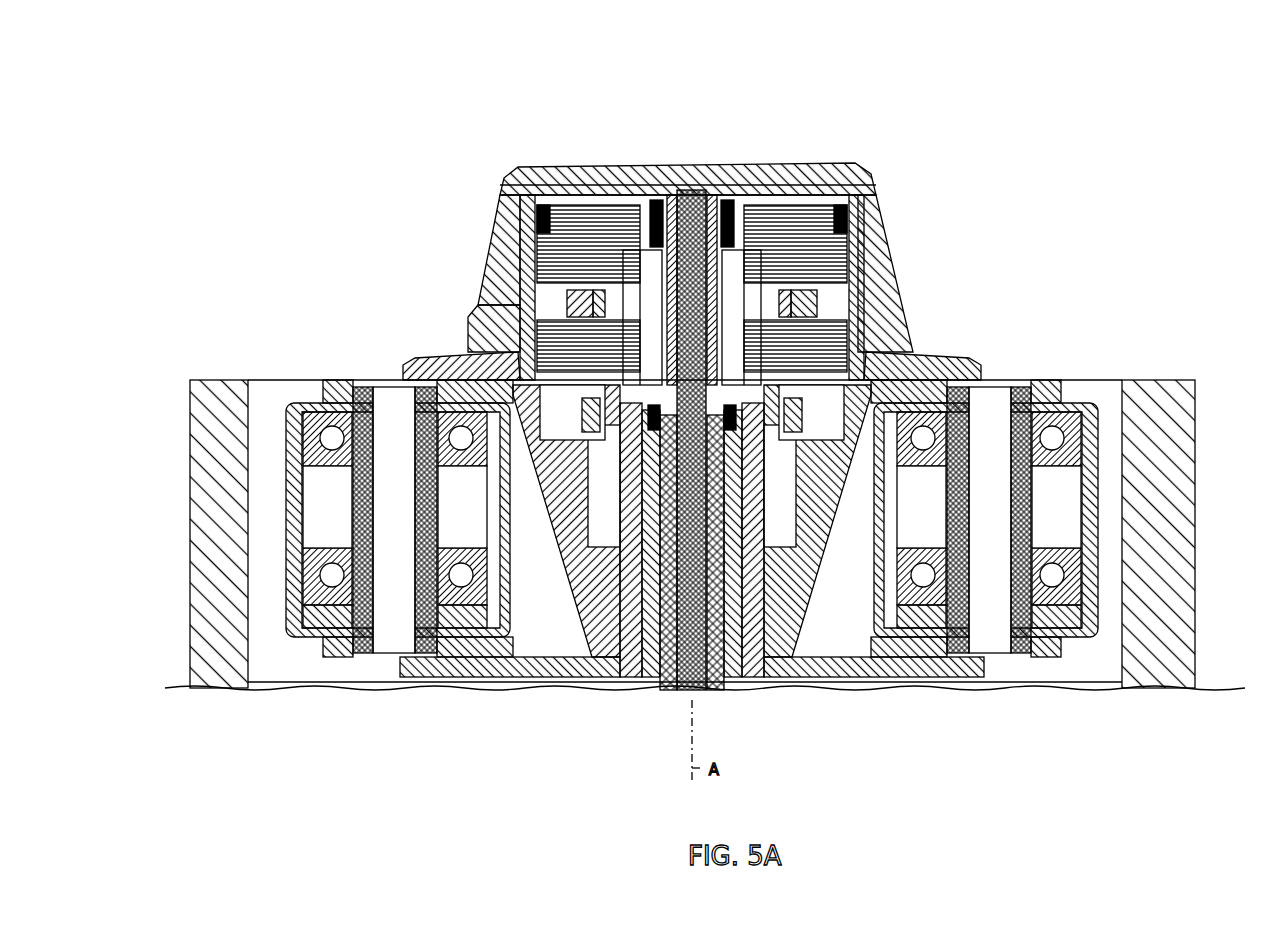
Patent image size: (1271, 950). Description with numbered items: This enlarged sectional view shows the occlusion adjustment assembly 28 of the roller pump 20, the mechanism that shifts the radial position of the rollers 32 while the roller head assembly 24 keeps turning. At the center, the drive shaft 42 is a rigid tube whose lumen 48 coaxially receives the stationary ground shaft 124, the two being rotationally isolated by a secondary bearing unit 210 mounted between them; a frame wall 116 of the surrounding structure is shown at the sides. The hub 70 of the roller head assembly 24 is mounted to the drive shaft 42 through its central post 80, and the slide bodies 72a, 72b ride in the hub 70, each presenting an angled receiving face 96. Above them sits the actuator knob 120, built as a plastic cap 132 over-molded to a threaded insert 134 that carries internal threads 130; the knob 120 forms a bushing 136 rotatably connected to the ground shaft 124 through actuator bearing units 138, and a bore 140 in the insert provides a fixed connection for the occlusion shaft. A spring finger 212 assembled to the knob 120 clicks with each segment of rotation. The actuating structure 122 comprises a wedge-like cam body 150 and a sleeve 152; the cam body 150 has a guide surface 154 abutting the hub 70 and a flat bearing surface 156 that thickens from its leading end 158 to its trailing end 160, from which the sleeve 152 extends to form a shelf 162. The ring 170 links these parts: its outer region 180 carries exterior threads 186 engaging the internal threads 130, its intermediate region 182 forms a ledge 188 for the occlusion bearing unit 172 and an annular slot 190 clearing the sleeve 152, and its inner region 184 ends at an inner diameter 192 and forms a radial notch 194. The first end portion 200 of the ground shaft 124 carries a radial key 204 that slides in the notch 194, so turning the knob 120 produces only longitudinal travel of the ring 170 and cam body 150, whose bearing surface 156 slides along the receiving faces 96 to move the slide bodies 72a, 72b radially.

The roller pump 20 is at (1095, 90).
The roller head assembly 24 is at (907, 688).
The occlusion adjustment assembly 28 is at (848, 121).
The roller 32 is at (1102, 437).
The drive shaft 42 is at (650, 680).
The lumen 48 is at (667, 680).
The hub 70 is at (777, 682).
The first slide body 72a is at (1065, 385).
The second slide body 72b is at (320, 392).
The central post 80 is at (798, 640).
The receiving face 96 is at (447, 357).
The frame wall 116 is at (1117, 538).
The actuator knob 120 is at (914, 216).
The actuating structure 122 is at (842, 422).
The ground shaft 124 is at (719, 688).
The internal threads 130 is at (857, 238).
The plastic cap 132 is at (885, 193).
The threaded insert 134 is at (862, 183).
The bushing 136 is at (762, 220).
The actuator bearing unit 138 is at (665, 228).
The bore 140 is at (728, 250).
The cam body 150 is at (962, 378).
The sleeve 152 is at (872, 368).
The guide surface 154 is at (612, 690).
The bearing surface 156 is at (603, 537).
The leading end 158 is at (768, 578).
The trailing end 160 is at (552, 436).
The shelf 162 is at (800, 318).
The ring 170 is at (553, 295).
The occlusion bearing unit 172 is at (822, 305).
The outer region 180 is at (830, 297).
The intermediate region 182 is at (490, 258).
The inner region 184 is at (600, 262).
The exterior threads 186 is at (535, 273).
The ledge 188 is at (540, 313).
The annular slot 190 is at (524, 196).
The inner diameter 192 is at (806, 208).
The radial notch 194 is at (648, 205).
The first end portion 200 is at (683, 198).
The radial key 204 is at (663, 312).
The secondary bearing unit 210 is at (748, 398).
The spring finger 212 is at (794, 198).